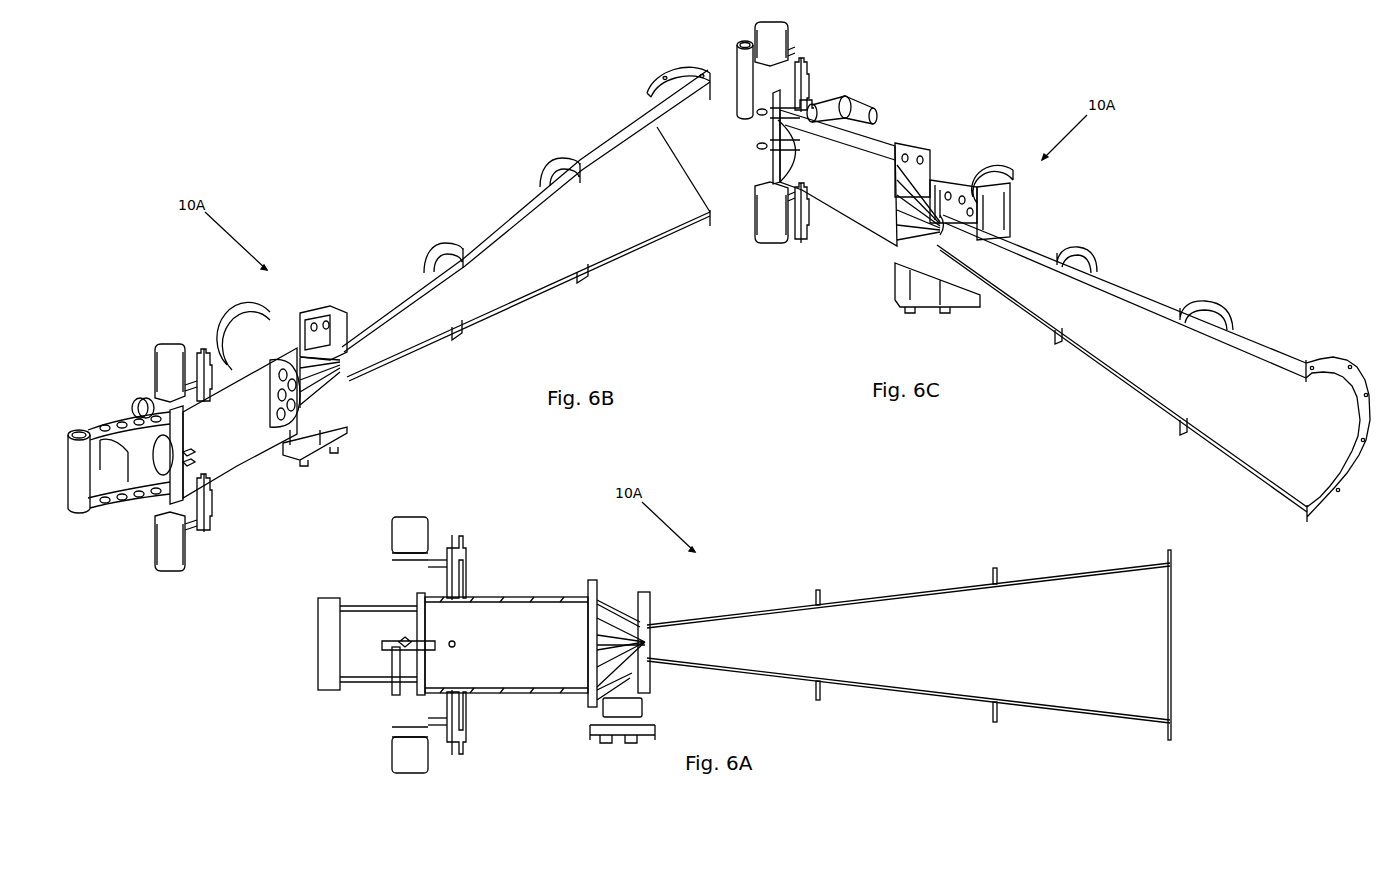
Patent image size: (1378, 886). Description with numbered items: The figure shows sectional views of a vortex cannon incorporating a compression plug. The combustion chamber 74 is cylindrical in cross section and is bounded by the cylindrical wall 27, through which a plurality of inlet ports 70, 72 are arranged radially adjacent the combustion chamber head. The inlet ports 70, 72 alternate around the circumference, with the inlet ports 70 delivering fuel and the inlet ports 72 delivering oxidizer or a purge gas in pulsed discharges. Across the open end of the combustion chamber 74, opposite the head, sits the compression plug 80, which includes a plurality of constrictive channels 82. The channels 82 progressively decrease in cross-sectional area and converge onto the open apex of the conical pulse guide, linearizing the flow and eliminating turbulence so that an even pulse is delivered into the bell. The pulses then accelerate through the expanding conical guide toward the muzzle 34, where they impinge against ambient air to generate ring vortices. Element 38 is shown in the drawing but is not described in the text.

In FIG. 6A, the cylindrical wall 27 is at (548, 600).
In FIG. 6B, the cylindrical wall 27 is at (237, 463).
In FIG. 6A, the muzzle 34 is at (927, 627).
In FIG. 6B, the fastener / bolt 38 is at (185, 453).
In FIG. 6A, the inlet ports 70 is at (456, 641).
In FIG. 6C, the inlet ports 72 is at (797, 187).
In FIG. 6C, the combustion chamber 74 is at (873, 173).
In FIG. 6A, the compression plug 80 is at (590, 652).
In FIG. 6B, the constrictive channels 82 is at (307, 388).
In FIG. 6C, the constrictive channels 82 is at (927, 223).